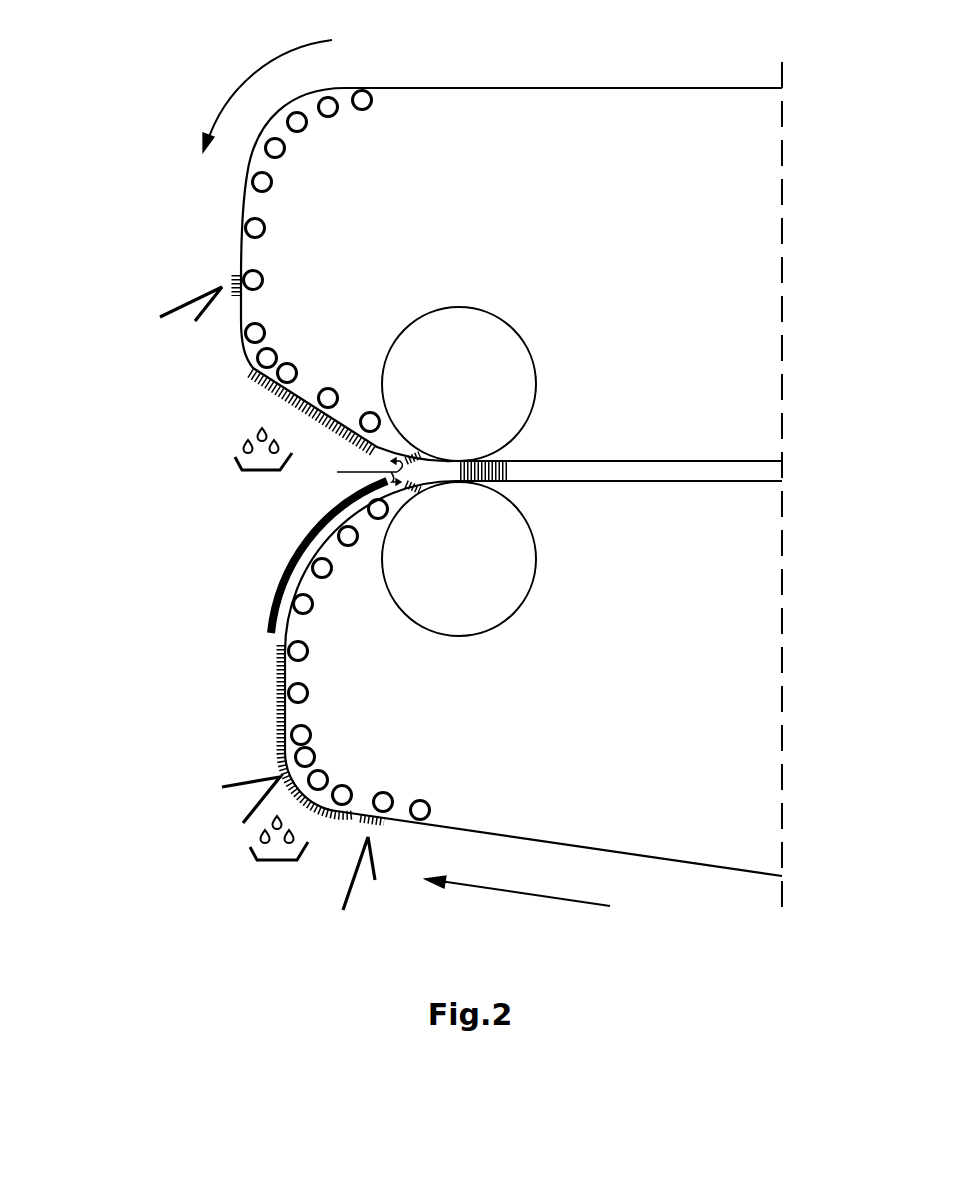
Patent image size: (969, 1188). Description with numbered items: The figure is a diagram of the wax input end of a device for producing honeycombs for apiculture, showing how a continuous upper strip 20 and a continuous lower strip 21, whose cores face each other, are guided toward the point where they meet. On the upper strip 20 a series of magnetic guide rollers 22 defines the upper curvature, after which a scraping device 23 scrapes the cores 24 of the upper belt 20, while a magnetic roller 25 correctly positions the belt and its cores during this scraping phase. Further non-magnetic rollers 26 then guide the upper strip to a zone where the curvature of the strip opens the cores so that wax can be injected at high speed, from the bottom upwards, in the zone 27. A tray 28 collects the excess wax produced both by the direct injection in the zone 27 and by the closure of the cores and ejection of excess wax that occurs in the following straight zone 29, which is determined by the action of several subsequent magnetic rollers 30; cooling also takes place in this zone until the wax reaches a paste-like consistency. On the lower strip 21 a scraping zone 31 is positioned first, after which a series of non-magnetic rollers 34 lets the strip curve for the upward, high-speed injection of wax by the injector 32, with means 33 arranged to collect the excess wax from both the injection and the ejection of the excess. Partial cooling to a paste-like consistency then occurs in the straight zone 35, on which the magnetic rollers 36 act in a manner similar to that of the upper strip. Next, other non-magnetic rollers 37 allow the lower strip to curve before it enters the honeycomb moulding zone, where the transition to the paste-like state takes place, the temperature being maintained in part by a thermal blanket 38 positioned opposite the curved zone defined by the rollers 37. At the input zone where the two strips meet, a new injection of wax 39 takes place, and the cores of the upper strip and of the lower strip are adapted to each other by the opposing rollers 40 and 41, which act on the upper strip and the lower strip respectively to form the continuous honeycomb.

The continuous upper strip 20 is at (623, 88).
The continuous lower strip 21 is at (625, 850).
The magnetic guide rollers 22 is at (310, 130).
The scraping device 23 is at (187, 302).
The cores 24 is at (237, 274).
The magnetic roller 25 is at (258, 278).
The non-magnetic rollers 26 is at (272, 352).
The wax injection zone 27 is at (250, 368).
The tray 28 is at (235, 457).
The straight zone 29 is at (337, 430).
The magnetic rollers 30 is at (371, 411).
The scraping zone 31 is at (353, 877).
The injector 32 is at (245, 778).
The means for collecting excess wax 33 is at (250, 850).
The non-magnetic rollers 34 is at (342, 786).
The straight zone 35 is at (278, 708).
The magnetic rollers 36 is at (308, 727).
The non-magnetic rollers 37 is at (313, 604).
The thermal blanket 38 is at (288, 575).
The new wax injection 39 is at (352, 470).
The opposing roller 40 is at (515, 350).
The opposing roller 41 is at (520, 586).